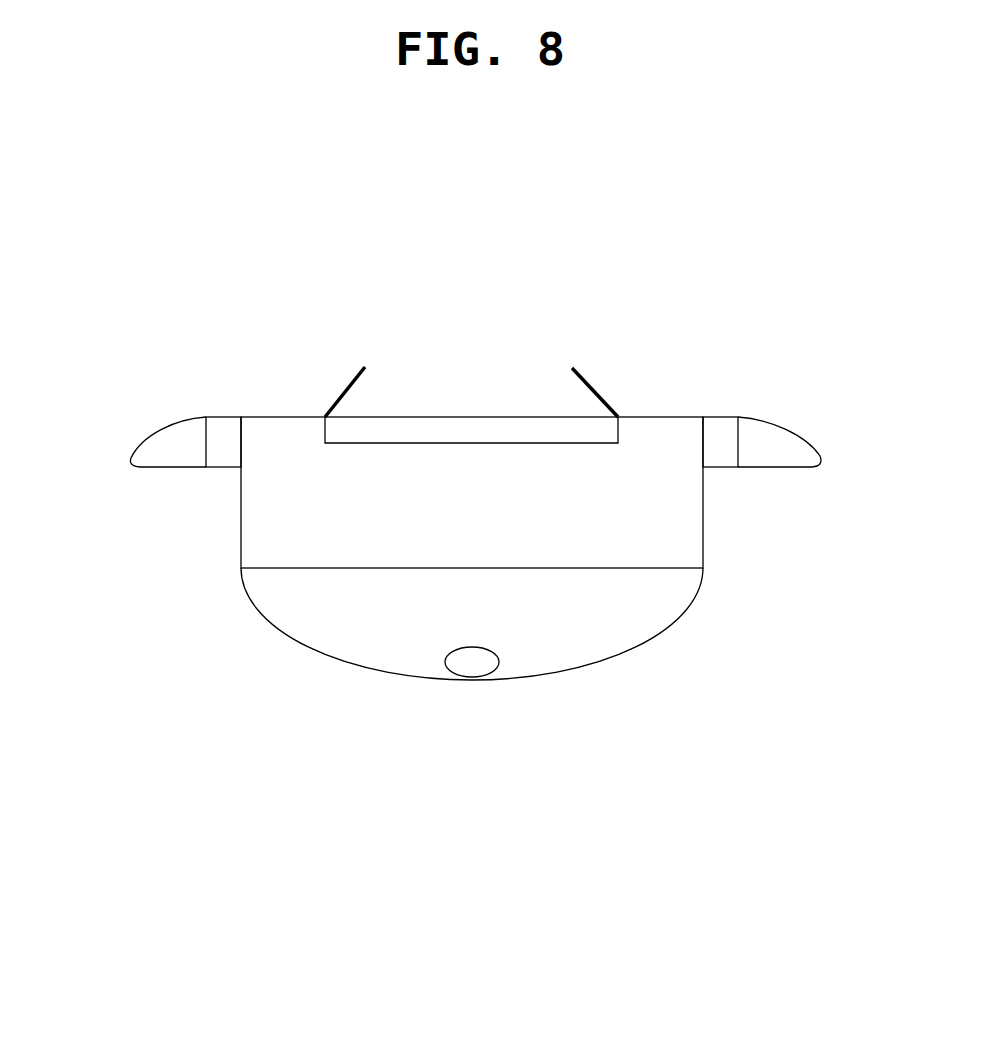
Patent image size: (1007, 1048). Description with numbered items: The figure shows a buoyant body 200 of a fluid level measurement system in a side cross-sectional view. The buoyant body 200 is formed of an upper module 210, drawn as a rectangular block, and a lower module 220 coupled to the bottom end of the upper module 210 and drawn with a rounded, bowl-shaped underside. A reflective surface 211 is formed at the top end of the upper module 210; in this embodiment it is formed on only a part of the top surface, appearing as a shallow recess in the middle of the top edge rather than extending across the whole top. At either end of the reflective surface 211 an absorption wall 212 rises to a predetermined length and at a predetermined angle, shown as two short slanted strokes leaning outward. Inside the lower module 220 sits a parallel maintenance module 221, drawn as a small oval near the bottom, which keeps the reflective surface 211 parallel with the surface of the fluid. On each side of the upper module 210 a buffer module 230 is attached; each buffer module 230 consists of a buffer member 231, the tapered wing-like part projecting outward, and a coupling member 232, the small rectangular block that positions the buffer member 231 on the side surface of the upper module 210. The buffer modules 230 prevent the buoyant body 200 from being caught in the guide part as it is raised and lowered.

The buoyant body 200 is at (137, 987).
The upper module 210 is at (241, 505).
The reflective surface 211 is at (467, 417).
The absorption wall 212 is at (352, 378).
The lower module 220 is at (552, 672).
The parallel maintenance module 221 is at (460, 680).
The buffer module 230 is at (187, 407).
The buffer member 231 is at (780, 467).
The coupling member 232 is at (722, 417).